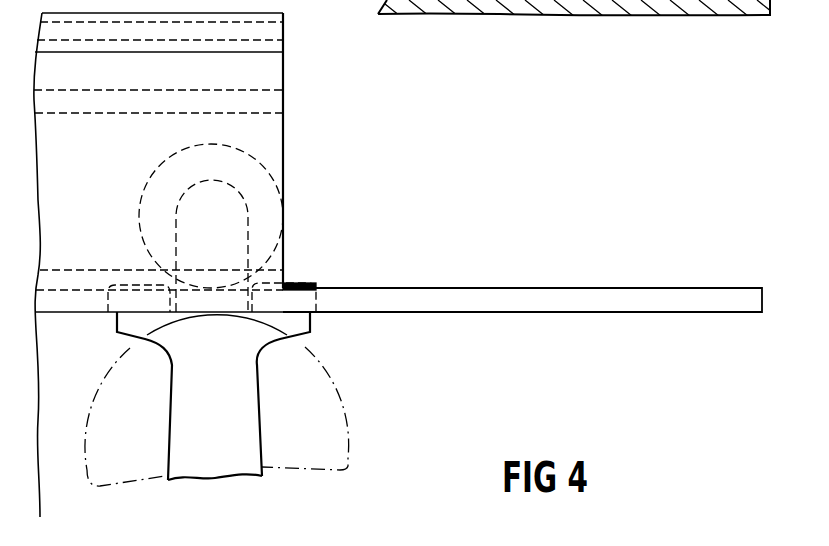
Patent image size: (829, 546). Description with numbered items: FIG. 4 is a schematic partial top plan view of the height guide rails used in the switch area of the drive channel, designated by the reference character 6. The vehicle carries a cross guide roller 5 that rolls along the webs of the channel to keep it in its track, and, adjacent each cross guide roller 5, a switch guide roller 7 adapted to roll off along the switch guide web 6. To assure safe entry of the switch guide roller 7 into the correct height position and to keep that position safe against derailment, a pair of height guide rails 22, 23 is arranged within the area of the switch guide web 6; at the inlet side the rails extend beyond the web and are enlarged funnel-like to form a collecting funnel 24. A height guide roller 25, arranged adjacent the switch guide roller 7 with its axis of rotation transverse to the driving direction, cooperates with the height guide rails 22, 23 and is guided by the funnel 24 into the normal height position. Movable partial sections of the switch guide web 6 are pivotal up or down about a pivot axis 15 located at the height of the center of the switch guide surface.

The cross guide roller 5 is at (338, 368).
The switch guide web 6 is at (287, 178).
The switch guide roller 7 is at (265, 165).
The pivot axis 15 is at (286, 16).
The height guide rail 22 is at (63, 315).
The height guide rail 23 is at (69, 270).
The collecting funnel 24 is at (548, 312).
The height guide roller 25 is at (126, 283).